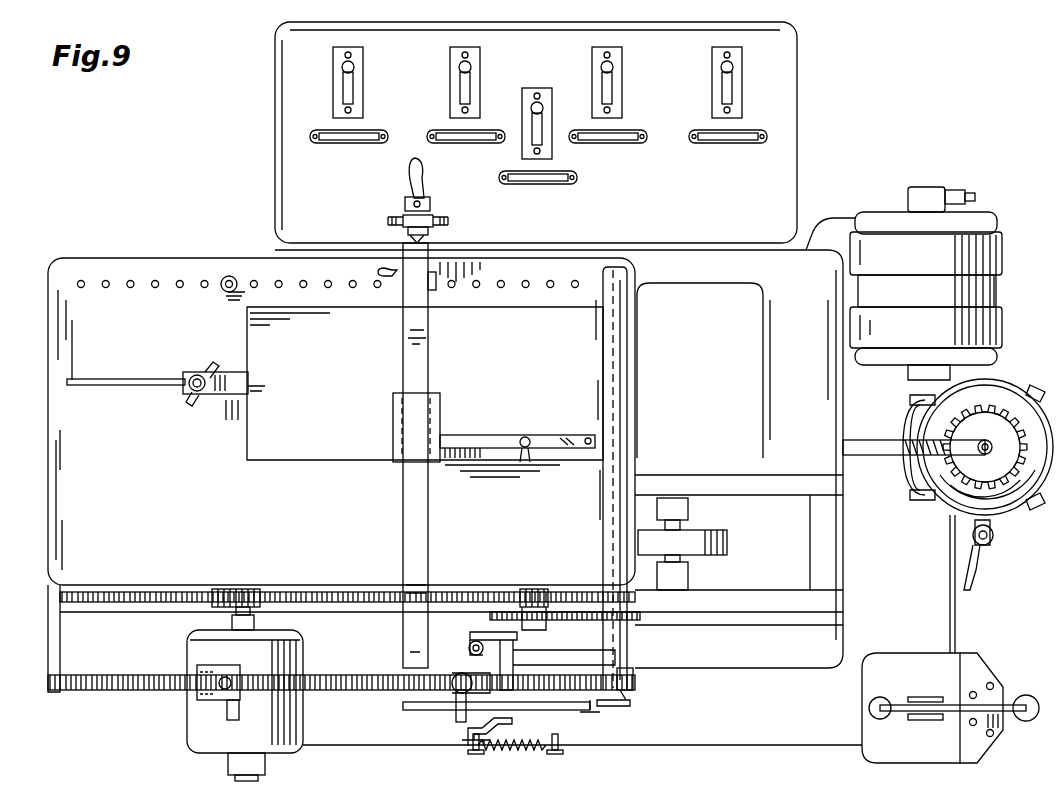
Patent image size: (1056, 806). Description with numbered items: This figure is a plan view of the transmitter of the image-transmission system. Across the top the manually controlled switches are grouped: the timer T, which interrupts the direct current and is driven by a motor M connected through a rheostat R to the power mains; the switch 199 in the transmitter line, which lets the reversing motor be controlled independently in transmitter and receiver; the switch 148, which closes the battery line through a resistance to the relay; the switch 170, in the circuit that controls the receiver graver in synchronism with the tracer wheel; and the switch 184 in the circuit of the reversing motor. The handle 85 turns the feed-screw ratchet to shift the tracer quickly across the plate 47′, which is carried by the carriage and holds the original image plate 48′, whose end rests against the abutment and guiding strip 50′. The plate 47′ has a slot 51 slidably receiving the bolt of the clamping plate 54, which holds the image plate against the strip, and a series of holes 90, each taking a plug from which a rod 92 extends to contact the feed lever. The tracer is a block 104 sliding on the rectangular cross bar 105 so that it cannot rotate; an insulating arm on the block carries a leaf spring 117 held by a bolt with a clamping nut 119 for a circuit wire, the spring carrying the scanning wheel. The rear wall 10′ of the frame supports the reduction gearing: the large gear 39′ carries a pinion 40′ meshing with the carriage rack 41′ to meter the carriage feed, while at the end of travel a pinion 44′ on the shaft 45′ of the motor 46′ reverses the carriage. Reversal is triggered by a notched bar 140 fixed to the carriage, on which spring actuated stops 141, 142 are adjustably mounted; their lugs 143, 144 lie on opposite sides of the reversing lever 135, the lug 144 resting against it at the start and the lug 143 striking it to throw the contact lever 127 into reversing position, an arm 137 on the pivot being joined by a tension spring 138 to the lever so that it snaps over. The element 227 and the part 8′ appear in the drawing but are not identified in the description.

The control panel 227 is at (790, 160).
The timer T is at (345, 70).
The controlled switch 199 is at (462, 68).
The manually controlled switch 148 is at (537, 108).
The manually controlled switch 170 is at (612, 69).
The manually controlled switch 184 is at (731, 69).
The handle 85 is at (410, 184).
The rear wall 10′ is at (806, 248).
The plate 47′ is at (50, 326).
The holes 90 is at (183, 278).
The rod 92 is at (231, 278).
The original image plate 48′ is at (247, 324).
The slot 51 is at (133, 378).
The clamping plate 54 is at (232, 372).
The cross bar 105 is at (402, 518).
The block 104 is at (392, 452).
The leaf spring 117 is at (574, 450).
The clamping nut 119 is at (522, 437).
The strip 50′ is at (620, 362).
The roller 8′ is at (710, 552).
The rack 41′ is at (152, 590).
The large gear 39′ is at (592, 612).
The pinion 44′ is at (262, 592).
The pinion 40′ is at (530, 590).
The shaft 45′ is at (240, 620).
The motor 46′ is at (195, 740).
The stop 141 is at (200, 682).
The lug 144 is at (200, 712).
The notched bar 140 is at (360, 672).
The stop 142 is at (455, 673).
The reversing lever 135 is at (400, 705).
The lug 143 is at (460, 718).
The arm 137 is at (470, 735).
The tension spring 138 is at (520, 750).
The lever 127 is at (597, 700).
The motor M is at (926, 276).
The rheostat R is at (950, 708).